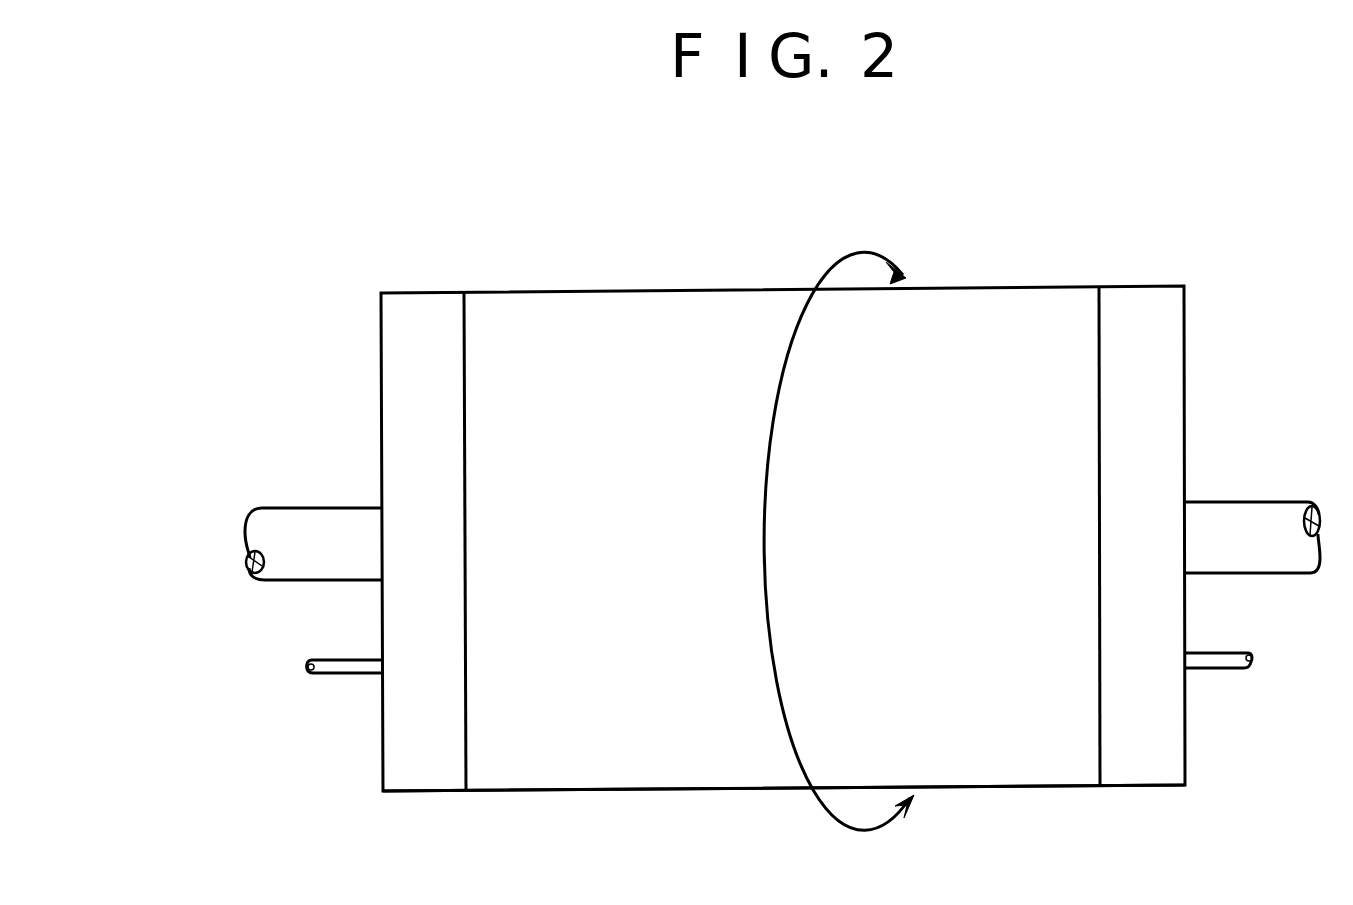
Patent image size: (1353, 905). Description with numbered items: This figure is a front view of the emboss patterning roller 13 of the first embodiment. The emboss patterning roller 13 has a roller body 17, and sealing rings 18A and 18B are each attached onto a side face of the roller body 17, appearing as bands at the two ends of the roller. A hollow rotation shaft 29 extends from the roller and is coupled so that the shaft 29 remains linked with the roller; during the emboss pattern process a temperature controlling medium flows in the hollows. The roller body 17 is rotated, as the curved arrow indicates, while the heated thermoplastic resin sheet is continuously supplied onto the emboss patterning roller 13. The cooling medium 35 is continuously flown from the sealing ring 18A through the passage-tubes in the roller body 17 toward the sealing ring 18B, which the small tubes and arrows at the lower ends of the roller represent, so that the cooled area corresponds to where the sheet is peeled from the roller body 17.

The emboss patterning roller 13 is at (746, 289).
The roller body 17 is at (703, 743).
The sealing ring 18A is at (1138, 315).
The sealing ring 18B is at (425, 315).
The hollow rotation shaft 29 is at (1258, 521).
The cooling medium 35 is at (295, 665).